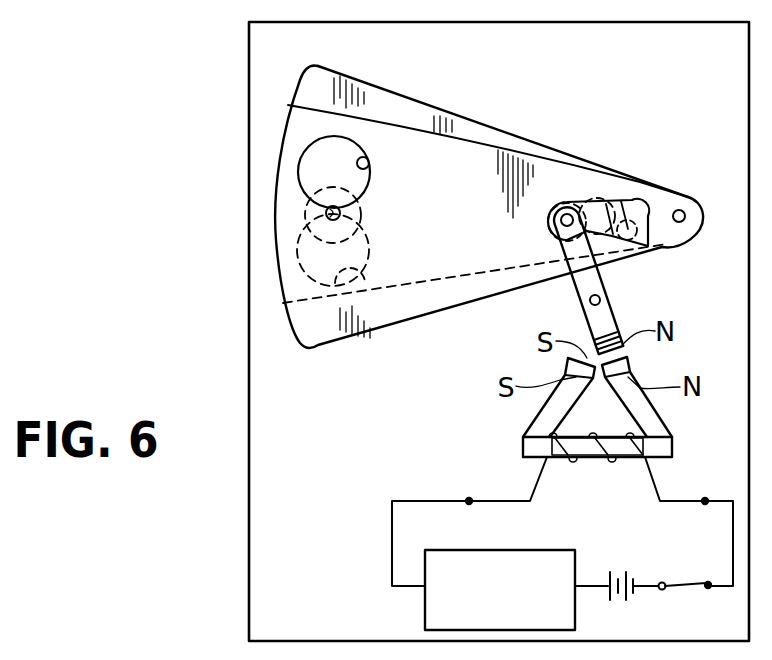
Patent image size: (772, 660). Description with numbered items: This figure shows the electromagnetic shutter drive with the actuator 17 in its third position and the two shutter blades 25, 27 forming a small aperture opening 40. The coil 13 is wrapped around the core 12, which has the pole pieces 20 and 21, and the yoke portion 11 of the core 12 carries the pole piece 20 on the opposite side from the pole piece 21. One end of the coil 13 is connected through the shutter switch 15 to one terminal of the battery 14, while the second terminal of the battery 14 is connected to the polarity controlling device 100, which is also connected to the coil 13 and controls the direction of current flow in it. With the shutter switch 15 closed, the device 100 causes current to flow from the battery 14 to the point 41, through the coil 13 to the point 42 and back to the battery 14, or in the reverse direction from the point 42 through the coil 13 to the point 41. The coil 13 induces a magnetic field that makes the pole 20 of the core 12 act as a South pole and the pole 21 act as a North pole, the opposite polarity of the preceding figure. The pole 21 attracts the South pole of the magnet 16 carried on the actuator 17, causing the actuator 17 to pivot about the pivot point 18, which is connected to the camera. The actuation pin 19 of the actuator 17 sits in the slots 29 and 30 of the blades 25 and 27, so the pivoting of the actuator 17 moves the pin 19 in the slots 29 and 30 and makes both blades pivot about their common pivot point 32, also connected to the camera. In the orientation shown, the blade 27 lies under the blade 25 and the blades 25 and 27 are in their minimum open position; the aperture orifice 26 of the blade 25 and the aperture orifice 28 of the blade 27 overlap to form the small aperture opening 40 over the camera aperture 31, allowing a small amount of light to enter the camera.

The left pole of electromagnet yoke 11 is at (534, 418).
The core 12 is at (662, 422).
The coil 13 is at (612, 460).
The battery 14 is at (628, 593).
The shutter switch 15 is at (693, 583).
The magnet 16 is at (603, 343).
The actuator 17 is at (564, 255).
The pivot point 18 is at (601, 299).
The actuation pin 19 is at (567, 213).
The pole piece 20 is at (568, 364).
The pole piece 21 is at (636, 364).
The shutter blade 25 is at (482, 173).
The aperture orifice 26 is at (368, 158).
The shutter blade 27 is at (420, 118).
The aperture orifice 28 is at (372, 277).
The slot 29 is at (647, 250).
The slot 30 is at (607, 178).
The aperture 31 is at (326, 214).
The pivot point 32 is at (688, 196).
The small aperture opening 40 is at (341, 212).
The point 41 is at (469, 500).
The point 42 is at (705, 500).
The polarity controlling device 100 is at (527, 550).